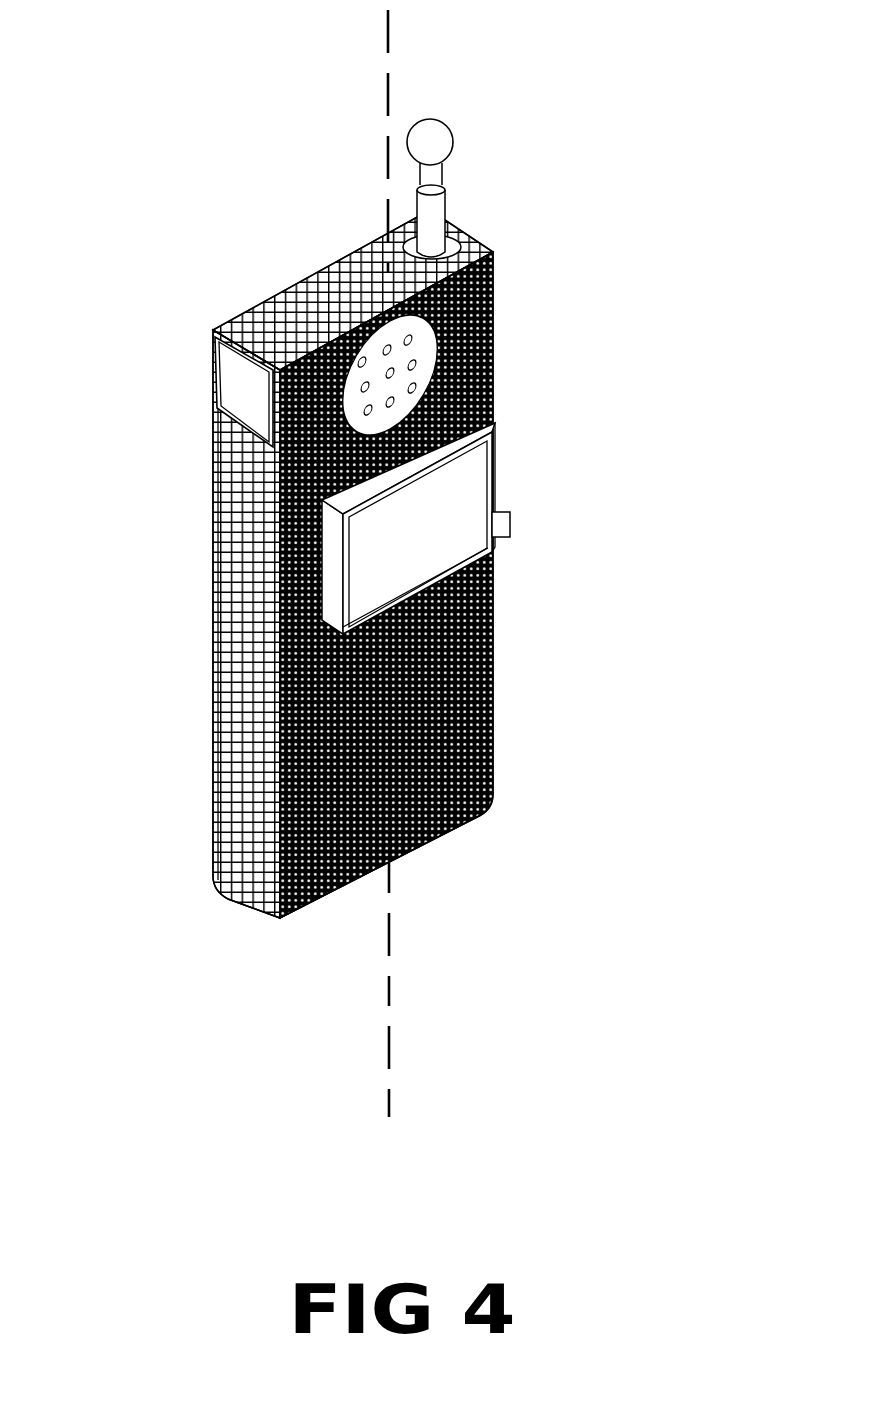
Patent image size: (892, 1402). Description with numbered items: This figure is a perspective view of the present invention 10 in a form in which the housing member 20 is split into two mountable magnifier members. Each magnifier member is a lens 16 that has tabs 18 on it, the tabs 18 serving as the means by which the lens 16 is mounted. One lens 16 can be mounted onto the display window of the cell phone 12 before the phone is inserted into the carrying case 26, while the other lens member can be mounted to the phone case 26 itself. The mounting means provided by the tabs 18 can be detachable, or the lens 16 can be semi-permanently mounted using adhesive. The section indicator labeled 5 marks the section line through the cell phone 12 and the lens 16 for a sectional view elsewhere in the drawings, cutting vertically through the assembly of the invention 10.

The present invention 10 is at (595, 483).
The cell phone 12 is at (243, 392).
The magnifier member lens 16 is at (404, 497).
The tabs 18 is at (510, 524).
The housing member 20 is at (330, 548).
The carrying case 26 is at (390, 865).
The section line 5- 5 is at (345, 107).